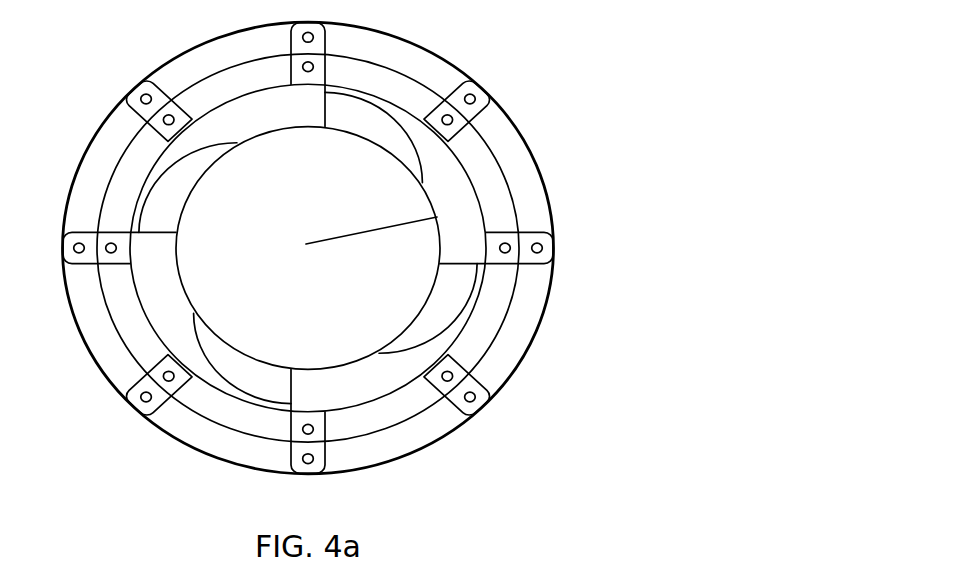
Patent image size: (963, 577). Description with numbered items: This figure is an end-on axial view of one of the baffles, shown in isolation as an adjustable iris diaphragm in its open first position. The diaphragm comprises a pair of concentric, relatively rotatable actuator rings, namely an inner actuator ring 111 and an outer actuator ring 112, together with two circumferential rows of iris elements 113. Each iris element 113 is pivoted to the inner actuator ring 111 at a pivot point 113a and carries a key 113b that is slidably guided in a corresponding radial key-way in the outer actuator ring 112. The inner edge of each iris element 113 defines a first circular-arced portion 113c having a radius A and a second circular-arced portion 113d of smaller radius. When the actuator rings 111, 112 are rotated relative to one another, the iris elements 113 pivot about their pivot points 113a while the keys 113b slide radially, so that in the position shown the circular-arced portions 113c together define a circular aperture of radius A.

The inner actuator ring 111 is at (498, 204).
The outer actuator ring 112 is at (436, 80).
The iris elements 113 is at (235, 125).
The pivot point 113a is at (447, 382).
The key 113b is at (473, 397).
The first circular-arced portion 113c is at (331, 366).
The second circular-arced portion 113d is at (442, 324).
The radius A is at (353, 234).